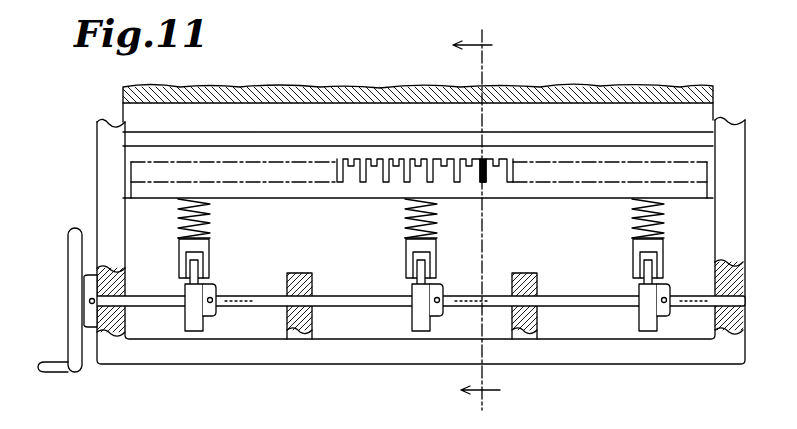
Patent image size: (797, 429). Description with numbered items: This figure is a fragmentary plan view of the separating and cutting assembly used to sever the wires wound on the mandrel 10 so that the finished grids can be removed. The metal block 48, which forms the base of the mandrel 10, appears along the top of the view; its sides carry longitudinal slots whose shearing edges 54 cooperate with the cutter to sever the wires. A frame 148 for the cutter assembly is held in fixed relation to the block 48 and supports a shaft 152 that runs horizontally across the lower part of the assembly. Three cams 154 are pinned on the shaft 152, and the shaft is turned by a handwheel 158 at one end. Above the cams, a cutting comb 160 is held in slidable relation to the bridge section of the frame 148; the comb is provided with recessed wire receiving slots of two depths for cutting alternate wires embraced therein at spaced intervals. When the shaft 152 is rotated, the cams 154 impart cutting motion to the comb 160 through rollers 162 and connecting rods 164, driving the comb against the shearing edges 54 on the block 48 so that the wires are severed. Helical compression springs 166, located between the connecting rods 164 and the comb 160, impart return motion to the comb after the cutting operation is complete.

The mandrel 10 is at (488, 218).
The metal block 48 is at (519, 85).
The shearing edges 54 is at (578, 146).
The frame 148 is at (102, 173).
The shaft 152 is at (583, 300).
The cams 154 is at (418, 315).
The handwheel 158 is at (70, 245).
The cutting comb 160 is at (695, 168).
The rollers 162 is at (421, 263).
The connecting rods 164 is at (436, 226).
The helical compression springs 166 is at (406, 226).